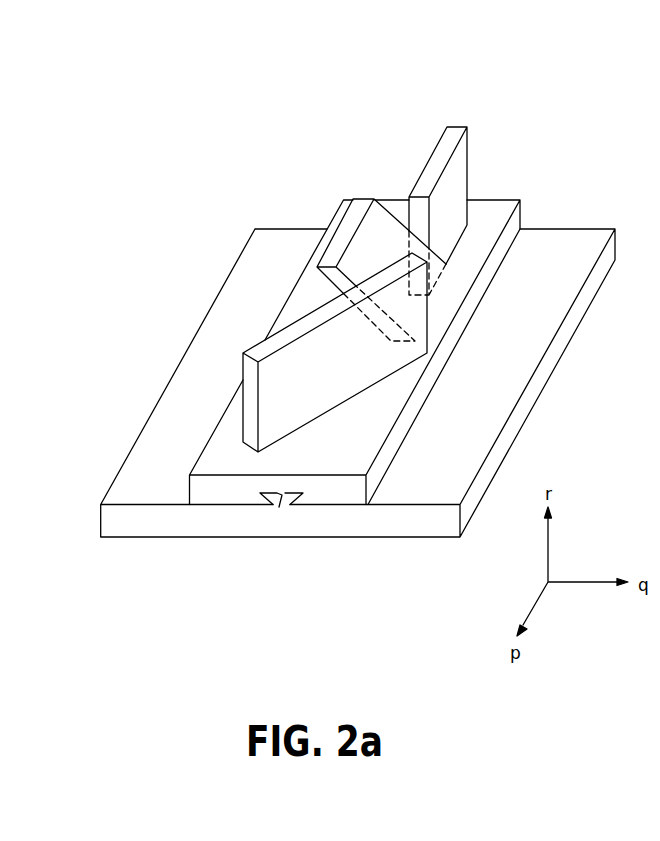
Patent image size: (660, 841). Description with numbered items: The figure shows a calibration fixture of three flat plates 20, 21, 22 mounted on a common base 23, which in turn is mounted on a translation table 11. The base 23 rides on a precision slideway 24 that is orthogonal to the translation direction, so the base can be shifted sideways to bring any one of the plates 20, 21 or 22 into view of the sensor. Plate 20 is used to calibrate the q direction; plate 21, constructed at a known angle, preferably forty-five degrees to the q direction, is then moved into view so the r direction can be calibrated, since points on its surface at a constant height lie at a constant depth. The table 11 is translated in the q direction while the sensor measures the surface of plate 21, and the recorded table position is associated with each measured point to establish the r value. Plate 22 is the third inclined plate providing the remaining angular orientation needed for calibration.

The translation table 11 is at (133, 537).
The flat plate 20 is at (428, 162).
The flat plate 21 is at (345, 213).
The flat plate 22 is at (243, 380).
The common base 23 is at (196, 463).
The precision slideway 24 is at (281, 516).